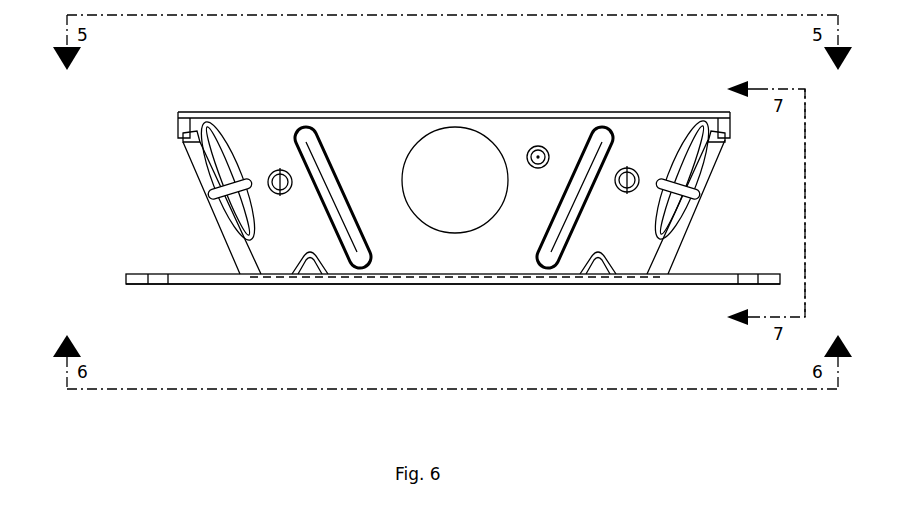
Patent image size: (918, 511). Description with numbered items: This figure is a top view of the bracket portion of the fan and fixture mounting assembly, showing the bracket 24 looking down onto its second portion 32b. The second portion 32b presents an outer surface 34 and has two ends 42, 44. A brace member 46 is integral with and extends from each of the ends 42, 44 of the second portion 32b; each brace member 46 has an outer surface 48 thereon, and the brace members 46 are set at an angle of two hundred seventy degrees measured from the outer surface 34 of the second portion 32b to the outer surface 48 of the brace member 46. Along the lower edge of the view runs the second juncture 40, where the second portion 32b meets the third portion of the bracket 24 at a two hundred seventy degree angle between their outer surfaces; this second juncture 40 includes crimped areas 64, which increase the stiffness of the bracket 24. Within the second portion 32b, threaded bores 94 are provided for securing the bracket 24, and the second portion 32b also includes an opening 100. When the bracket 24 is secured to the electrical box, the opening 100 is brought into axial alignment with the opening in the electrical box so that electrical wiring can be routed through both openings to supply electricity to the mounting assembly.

The bracket 24 is at (236, 100).
The threaded bores 94 is at (281, 200).
The opening 100 is at (438, 132).
The second portion 32b is at (511, 130).
The outer surface 34 is at (379, 164).
The end 42 is at (178, 130).
The end 44 is at (732, 127).
The brace member 46 is at (199, 182).
The outer surface 48 is at (706, 234).
The crimped areas 64 is at (313, 268).
The second juncture 40 is at (455, 280).